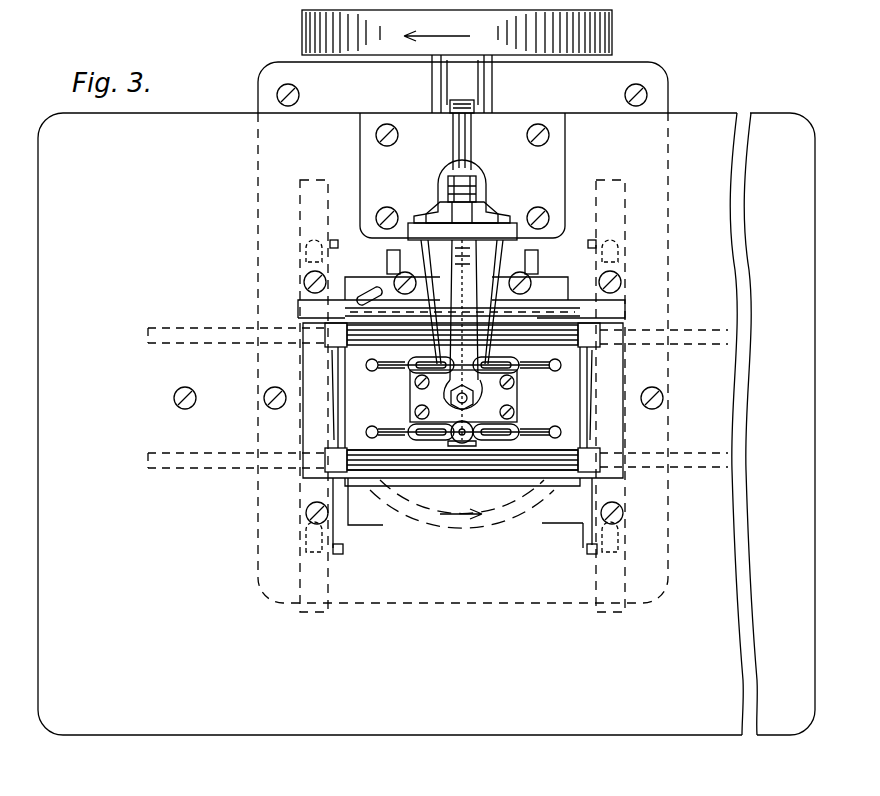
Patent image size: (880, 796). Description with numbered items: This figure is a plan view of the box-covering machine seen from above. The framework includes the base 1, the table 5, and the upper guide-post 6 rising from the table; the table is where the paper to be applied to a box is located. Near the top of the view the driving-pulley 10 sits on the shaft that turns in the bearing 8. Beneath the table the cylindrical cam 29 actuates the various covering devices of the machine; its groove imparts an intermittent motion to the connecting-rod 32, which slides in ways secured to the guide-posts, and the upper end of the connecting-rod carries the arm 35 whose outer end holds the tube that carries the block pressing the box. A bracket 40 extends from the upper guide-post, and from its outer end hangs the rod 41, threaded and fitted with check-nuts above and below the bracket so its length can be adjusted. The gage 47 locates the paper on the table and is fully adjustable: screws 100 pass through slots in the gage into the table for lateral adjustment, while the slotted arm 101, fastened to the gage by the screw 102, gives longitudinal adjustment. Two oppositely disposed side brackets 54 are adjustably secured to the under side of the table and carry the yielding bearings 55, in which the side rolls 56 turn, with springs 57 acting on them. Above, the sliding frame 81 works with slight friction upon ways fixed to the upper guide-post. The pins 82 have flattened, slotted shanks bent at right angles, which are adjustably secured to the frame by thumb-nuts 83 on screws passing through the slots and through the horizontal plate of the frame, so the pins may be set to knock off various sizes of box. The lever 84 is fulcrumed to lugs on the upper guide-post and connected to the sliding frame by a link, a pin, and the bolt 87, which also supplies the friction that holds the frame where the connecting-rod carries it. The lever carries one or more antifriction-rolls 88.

The base 1 is at (660, 78).
The table 5 is at (706, 120).
The upper guide-post 6 is at (487, 173).
The bearing 8 is at (432, 89).
The driving-pulley 10 is at (613, 25).
The cam 29 is at (428, 531).
The connecting-rod 32 is at (480, 216).
The arm 35 is at (462, 270).
The bracket 40 is at (463, 340).
The rod 41 is at (471, 399).
The gage 47 is at (540, 294).
The side bracket 54 is at (624, 216).
The yielding bearing 55 is at (330, 338).
The side roll 56 is at (603, 383).
The spring 57 is at (515, 318).
The sliding frame 81 is at (410, 228).
The pin 82 is at (400, 372).
The thumb-nut 83 is at (462, 460).
The lever 84 is at (471, 146).
The bolt 87 is at (454, 262).
The antifriction-roll 88 is at (450, 182).
The screw 100 is at (471, 254).
The slotted arm 101 is at (306, 298).
The screw 102 is at (370, 288).